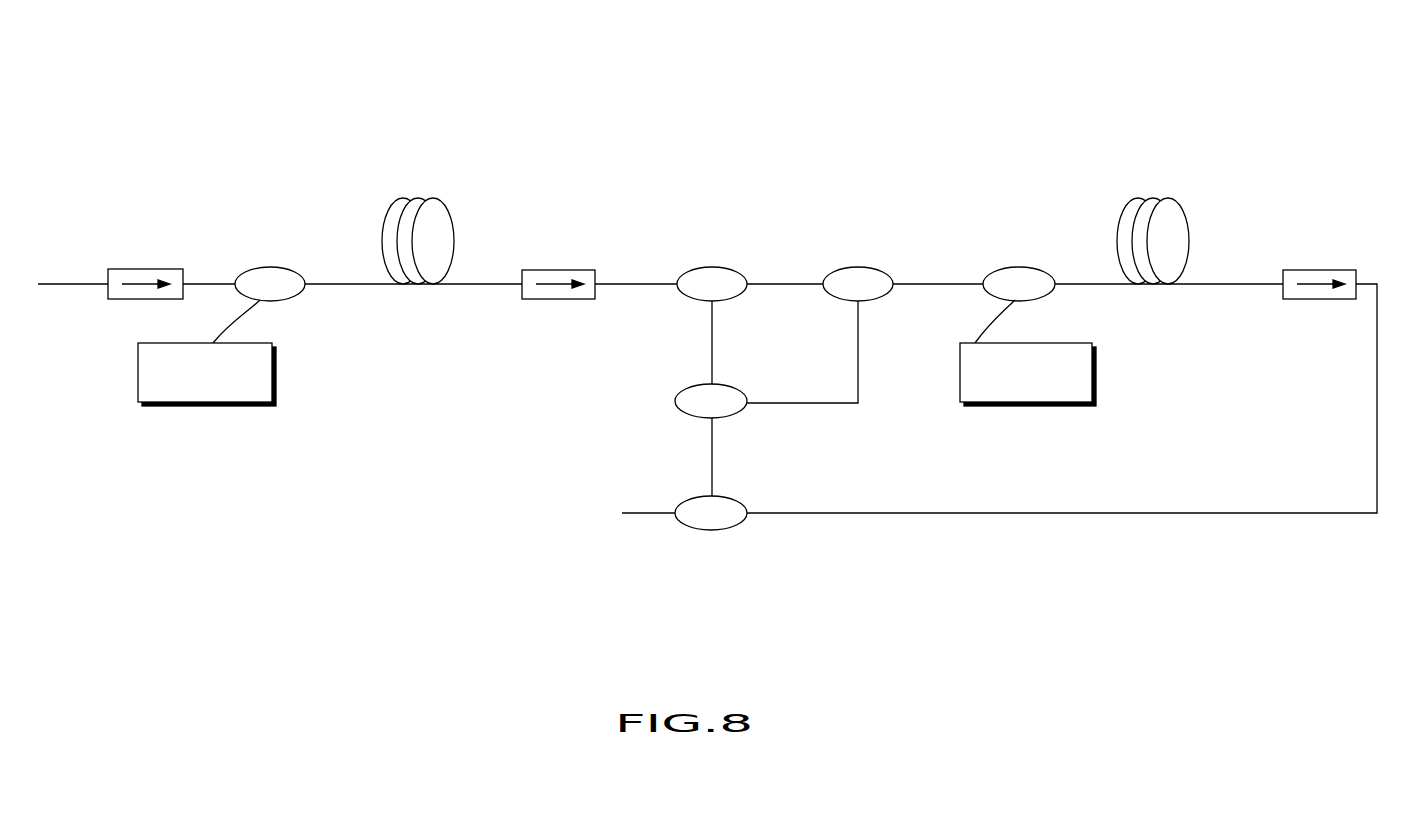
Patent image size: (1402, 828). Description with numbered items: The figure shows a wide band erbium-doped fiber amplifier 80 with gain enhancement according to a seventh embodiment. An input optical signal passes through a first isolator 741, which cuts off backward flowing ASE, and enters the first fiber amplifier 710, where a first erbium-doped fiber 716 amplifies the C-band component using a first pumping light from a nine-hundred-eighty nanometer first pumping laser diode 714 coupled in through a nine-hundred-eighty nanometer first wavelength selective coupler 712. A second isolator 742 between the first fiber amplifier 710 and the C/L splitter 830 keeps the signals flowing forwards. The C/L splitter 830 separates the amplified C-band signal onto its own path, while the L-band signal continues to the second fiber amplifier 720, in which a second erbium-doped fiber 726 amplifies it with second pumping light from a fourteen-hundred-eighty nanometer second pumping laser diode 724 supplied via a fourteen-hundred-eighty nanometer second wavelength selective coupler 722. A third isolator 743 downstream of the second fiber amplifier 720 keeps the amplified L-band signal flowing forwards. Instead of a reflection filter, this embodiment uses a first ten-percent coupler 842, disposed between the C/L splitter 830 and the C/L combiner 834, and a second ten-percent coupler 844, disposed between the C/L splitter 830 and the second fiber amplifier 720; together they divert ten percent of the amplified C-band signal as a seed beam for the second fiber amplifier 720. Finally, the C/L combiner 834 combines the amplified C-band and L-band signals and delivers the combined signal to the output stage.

The fiber amplifier 80 is at (745, 57).
The first fiber amplifier 710 is at (376, 195).
The first wavelength selective coupler 712 is at (298, 297).
The first pumping laser diode 714 is at (276, 376).
The first erbium-doped fiber 716 is at (455, 240).
The second fiber amplifier 720 is at (1103, 195).
The second wavelength selective coupler 722 is at (1046, 297).
The second pumping laser diode 724 is at (1096, 376).
The second erbium-doped fiber 726 is at (1190, 240).
The first isolator 741 is at (145, 269).
The second isolator 742 is at (558, 270).
The third isolator 743 is at (1320, 270).
The C/L splitter 830 is at (726, 301).
The C/L combiner 834 is at (735, 497).
The first 10% coupler 842 is at (683, 413).
The second 10% coupler 844 is at (872, 301).